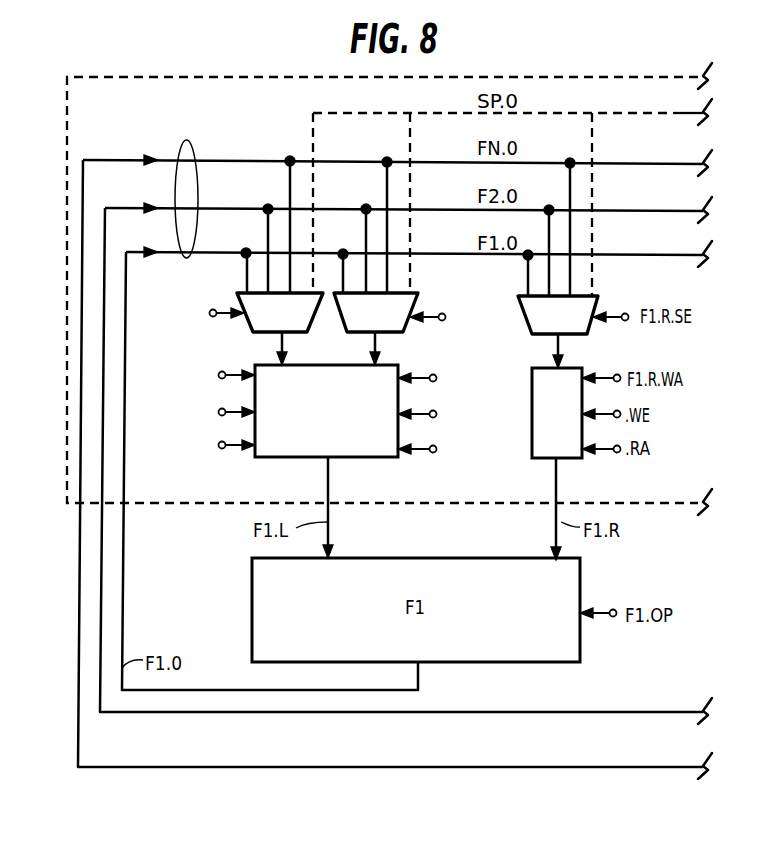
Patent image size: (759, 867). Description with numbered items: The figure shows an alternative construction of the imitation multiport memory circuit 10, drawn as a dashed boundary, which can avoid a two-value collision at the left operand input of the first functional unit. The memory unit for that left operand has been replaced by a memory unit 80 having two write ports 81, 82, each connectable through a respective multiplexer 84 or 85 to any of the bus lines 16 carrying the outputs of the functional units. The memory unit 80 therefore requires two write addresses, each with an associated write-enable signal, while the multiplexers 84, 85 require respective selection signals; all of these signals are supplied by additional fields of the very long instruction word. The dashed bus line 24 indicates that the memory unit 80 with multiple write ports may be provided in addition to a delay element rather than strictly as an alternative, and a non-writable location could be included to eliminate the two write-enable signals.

The imitation multiport memory circuit 10 is at (649, 508).
The bus lines 16 is at (186, 148).
The bus line 24 is at (313, 113).
The memory unit 80 is at (375, 458).
The write port 81 is at (278, 340).
The write port 82 is at (372, 340).
The multiplexer 84 is at (240, 292).
The multiplexer 85 is at (417, 296).